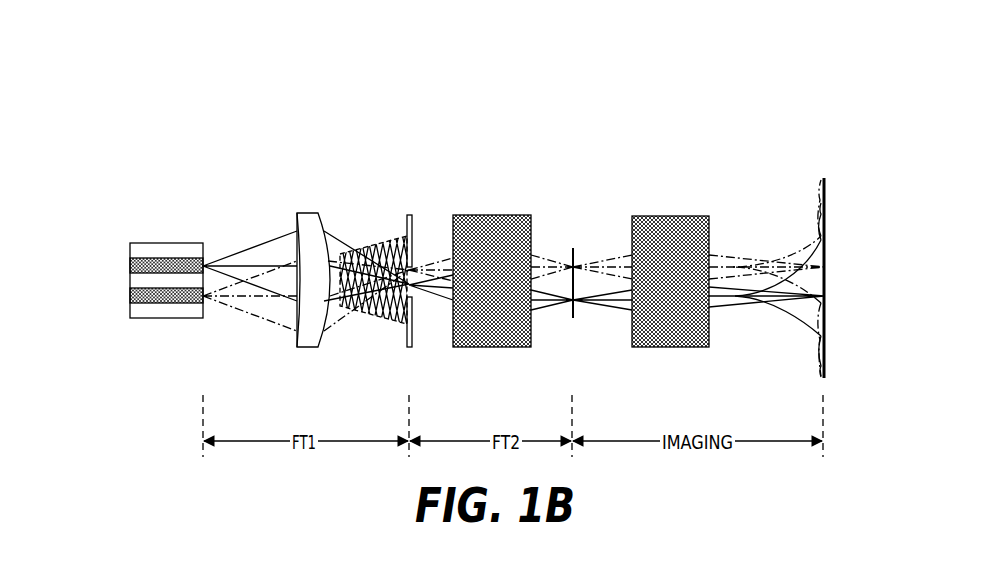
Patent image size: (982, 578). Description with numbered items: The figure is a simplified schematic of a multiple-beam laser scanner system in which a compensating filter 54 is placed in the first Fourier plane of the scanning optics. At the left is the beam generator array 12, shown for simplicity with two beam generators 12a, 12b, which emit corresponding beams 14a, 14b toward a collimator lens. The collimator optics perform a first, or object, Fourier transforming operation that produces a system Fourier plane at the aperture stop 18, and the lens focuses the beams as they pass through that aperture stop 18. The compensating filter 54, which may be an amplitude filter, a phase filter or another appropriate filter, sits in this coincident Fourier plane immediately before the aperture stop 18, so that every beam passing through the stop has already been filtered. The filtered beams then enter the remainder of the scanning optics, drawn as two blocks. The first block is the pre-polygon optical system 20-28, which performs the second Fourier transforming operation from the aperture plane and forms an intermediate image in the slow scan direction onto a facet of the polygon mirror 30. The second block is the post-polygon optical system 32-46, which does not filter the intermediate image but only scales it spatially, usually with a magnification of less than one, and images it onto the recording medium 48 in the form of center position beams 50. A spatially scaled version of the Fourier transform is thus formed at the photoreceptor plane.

The beam generator array 12 is at (164, 234).
The beam generator 12a is at (130, 265).
The beam generator 12b is at (130, 295).
The beam 14a is at (251, 247).
The beam 14b is at (252, 315).
The aperture stop 18 is at (413, 223).
The compensating filter 54 is at (404, 237).
The pre-polygon optical system 20-28 is at (478, 347).
The polygon mirror 30 is at (573, 252).
The post-polygon optical system 32-46 is at (655, 347).
The recording medium 48 is at (826, 192).
The center position beams 50 is at (741, 241).